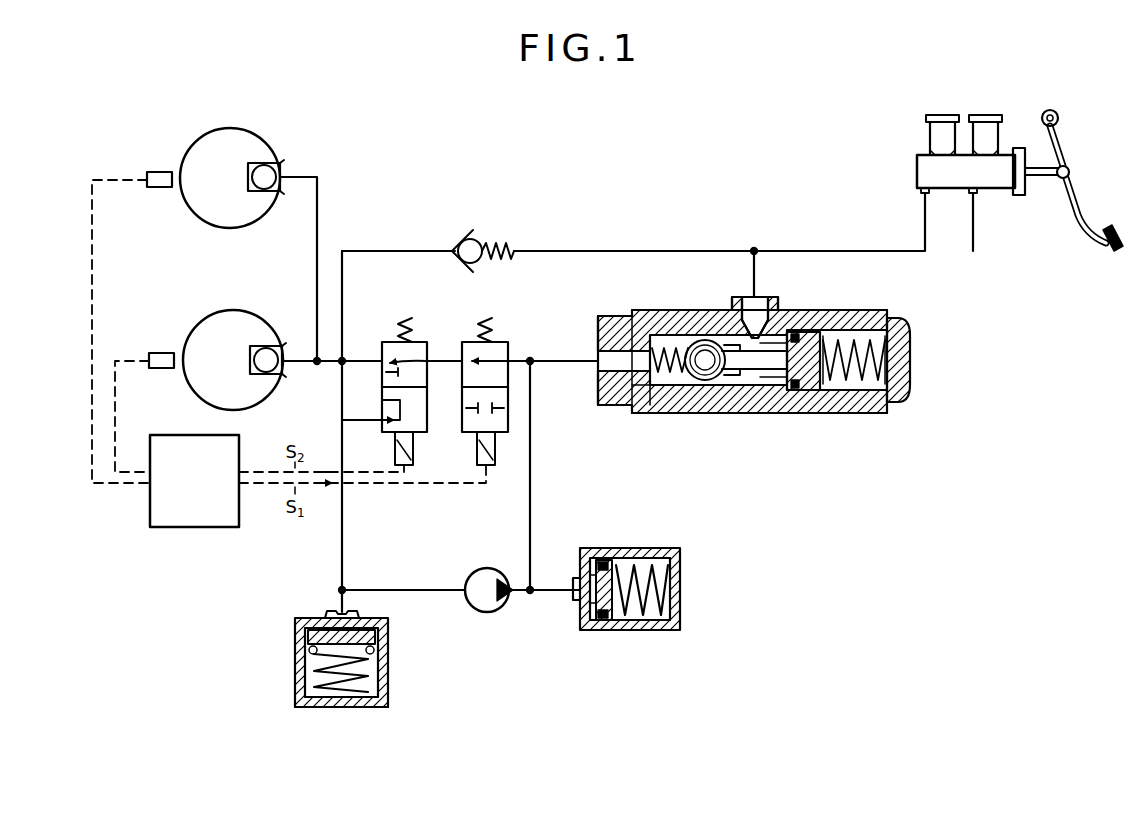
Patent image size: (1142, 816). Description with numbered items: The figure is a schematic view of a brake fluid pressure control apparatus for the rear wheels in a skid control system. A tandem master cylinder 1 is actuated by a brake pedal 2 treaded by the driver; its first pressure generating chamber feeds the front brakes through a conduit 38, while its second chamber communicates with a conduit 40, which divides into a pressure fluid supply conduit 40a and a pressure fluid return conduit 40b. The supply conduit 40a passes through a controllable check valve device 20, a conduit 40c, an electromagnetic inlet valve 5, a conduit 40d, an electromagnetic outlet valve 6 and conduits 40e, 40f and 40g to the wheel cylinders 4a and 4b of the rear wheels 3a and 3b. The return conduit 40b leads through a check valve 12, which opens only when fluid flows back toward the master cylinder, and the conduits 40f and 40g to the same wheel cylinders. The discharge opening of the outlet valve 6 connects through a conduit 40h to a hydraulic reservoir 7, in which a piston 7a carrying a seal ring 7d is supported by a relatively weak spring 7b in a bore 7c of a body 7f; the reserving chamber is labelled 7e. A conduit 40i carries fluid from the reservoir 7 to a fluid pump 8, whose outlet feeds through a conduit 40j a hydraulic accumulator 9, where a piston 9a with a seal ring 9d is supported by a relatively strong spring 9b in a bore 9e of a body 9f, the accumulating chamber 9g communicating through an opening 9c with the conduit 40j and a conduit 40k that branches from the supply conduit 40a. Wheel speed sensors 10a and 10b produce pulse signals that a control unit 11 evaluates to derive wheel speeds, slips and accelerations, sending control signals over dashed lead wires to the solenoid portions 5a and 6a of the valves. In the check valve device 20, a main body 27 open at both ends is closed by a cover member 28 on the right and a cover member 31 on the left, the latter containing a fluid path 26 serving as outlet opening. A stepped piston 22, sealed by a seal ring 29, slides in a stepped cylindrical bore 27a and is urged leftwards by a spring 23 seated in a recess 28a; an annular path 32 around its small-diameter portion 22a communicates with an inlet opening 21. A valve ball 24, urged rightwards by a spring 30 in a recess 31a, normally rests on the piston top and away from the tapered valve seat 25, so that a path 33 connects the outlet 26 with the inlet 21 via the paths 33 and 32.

The tandem master cylinder 1 is at (949, 108).
The brake pedal 2 is at (1064, 150).
The rear wheel 3a is at (232, 131).
The rear wheel 3b is at (234, 316).
The wheel cylinder 4a is at (268, 160).
The wheel cylinder 4b is at (270, 343).
The electromagnetic inlet valve 5 is at (498, 342).
The solenoid portion 5a is at (495, 466).
The electromagnetic outlet valve 6 is at (417, 342).
The solenoid portion 6a is at (413, 466).
The hydraulic reservoir 7 is at (350, 710).
The piston 7a is at (308, 650).
The spring 7b is at (378, 660).
The bore 7c is at (378, 690).
The seal ring 7d is at (308, 636).
The accumulator port 7e is at (333, 619).
The body 7f is at (323, 708).
The fluid pump 8 is at (496, 612).
The hydraulic accumulator 9 is at (647, 546).
The piston 9a is at (612, 622).
The spring 9b is at (666, 591).
The opening 9c is at (575, 600).
The seal ring 9d is at (606, 560).
The bore 9e is at (663, 628).
The body 9f is at (680, 561).
The accumulating chamber 9g is at (592, 578).
The wheel speed sensor 10a is at (157, 172).
The wheel speed sensor 10b is at (159, 353).
The control unit 11 is at (193, 512).
The check valve 12 is at (470, 241).
The controllable check valve device 20 is at (710, 438).
The inlet opening 21 is at (748, 300).
The stepped piston 22 is at (837, 400).
The small-diameter portion 22a is at (756, 382).
The spring 23 is at (880, 404).
The valve ball 24 is at (652, 414).
The valve seat 25 is at (722, 392).
The fluid path 26 is at (598, 340).
The main body 27 is at (851, 309).
The stepped cylindrical bore 27a is at (812, 310).
The cover member 28 is at (906, 324).
The recess 28a is at (912, 360).
The seal ring 29 is at (807, 400).
The spring 30 is at (615, 404).
The cover member 31 is at (604, 392).
The recess 31a is at (628, 414).
The annular path 32 is at (775, 406).
The path 33 is at (684, 312).
The conduit 38 is at (976, 240).
The conduit 40 is at (787, 247).
The pressure fluid supply conduit 40a is at (565, 362).
The pressure fluid return conduit 40b is at (618, 250).
The conduit 40c is at (527, 361).
The conduit 40d is at (441, 361).
The conduit 40e is at (361, 362).
The conduit 40f is at (300, 362).
The conduit 40g is at (318, 213).
The conduit 40h is at (343, 521).
The conduit 40i is at (436, 592).
The conduit 40j is at (553, 592).
The conduit 40k is at (531, 521).